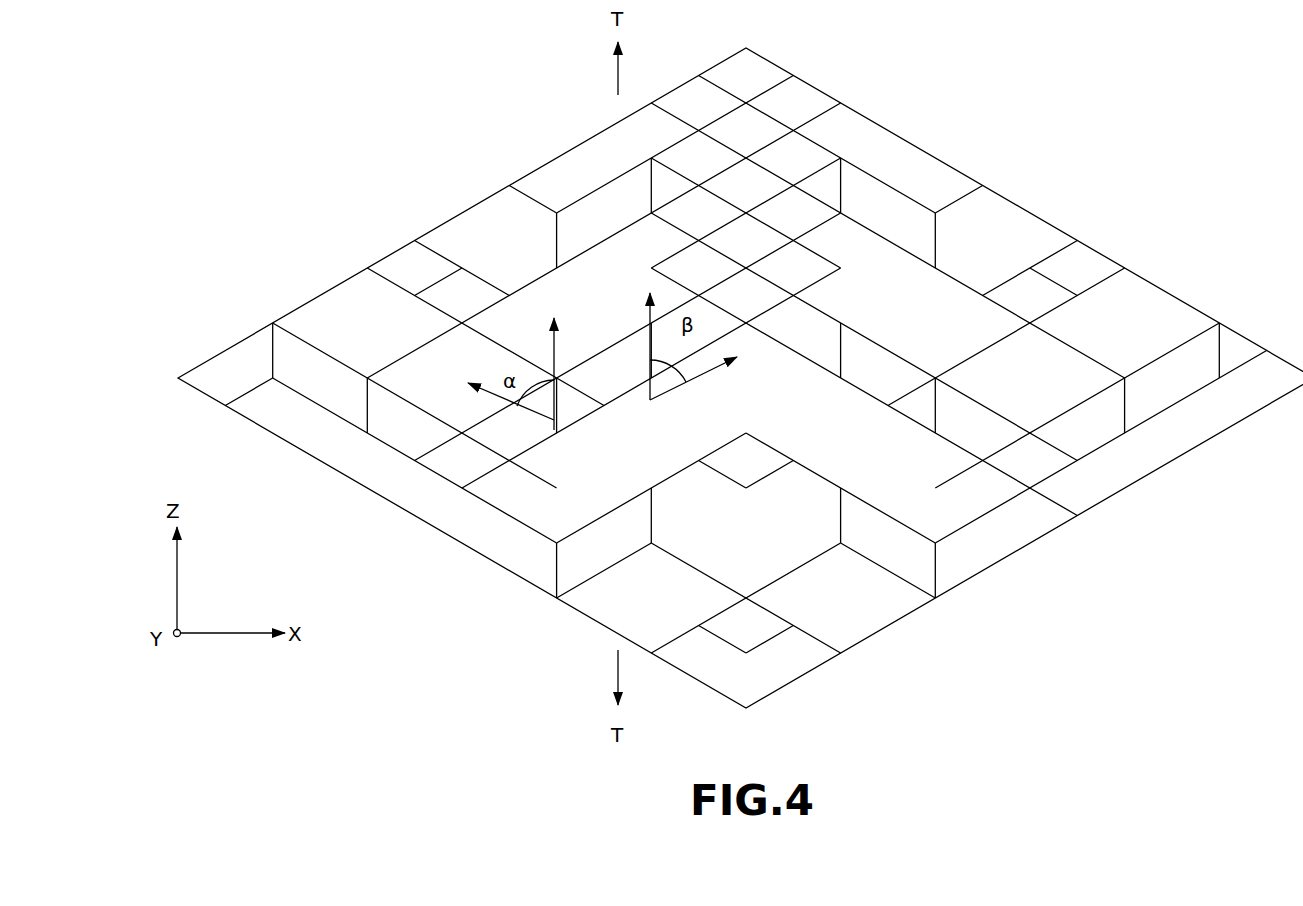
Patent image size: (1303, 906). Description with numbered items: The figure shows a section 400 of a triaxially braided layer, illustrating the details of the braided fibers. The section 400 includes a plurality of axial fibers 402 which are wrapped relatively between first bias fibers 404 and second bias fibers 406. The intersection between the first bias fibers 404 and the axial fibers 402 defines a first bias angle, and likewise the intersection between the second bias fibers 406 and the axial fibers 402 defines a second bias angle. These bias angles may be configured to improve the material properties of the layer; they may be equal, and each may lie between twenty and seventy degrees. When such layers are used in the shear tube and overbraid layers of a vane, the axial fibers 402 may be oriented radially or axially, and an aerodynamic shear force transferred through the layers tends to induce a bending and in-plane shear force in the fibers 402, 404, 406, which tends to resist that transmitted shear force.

The section of a triaxially braided layer 400 is at (740, 378).
The axial fibers 402 is at (578, 222).
The first bias fibers 404 is at (352, 297).
The second bias fibers 406 is at (662, 262).